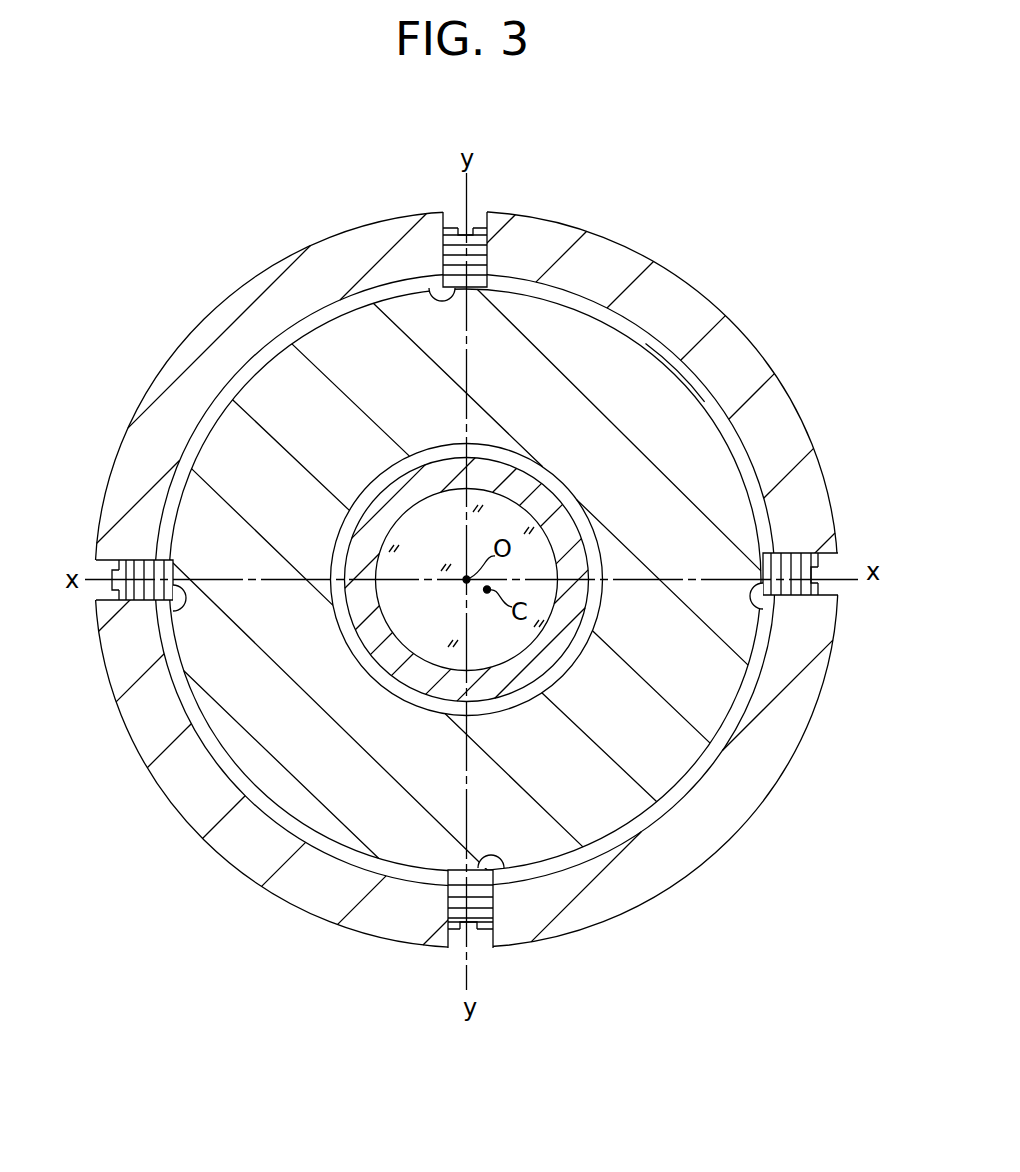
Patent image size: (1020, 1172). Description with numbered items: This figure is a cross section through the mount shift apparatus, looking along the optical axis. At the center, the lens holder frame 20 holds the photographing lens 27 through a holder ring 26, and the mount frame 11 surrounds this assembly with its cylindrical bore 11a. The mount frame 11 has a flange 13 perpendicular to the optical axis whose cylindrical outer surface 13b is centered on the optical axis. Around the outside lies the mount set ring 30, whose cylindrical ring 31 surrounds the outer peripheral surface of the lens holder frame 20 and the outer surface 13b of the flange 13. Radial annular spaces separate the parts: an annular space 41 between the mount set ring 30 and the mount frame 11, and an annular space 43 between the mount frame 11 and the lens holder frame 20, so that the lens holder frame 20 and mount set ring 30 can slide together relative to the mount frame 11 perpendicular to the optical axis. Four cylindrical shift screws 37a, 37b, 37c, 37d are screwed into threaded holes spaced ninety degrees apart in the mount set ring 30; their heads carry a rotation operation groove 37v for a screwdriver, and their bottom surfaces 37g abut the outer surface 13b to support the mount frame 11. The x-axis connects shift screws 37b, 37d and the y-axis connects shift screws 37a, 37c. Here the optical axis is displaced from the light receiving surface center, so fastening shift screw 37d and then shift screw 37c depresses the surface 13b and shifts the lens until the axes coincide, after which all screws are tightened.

The mount set ring 30 is at (477, 580).
The cylindrical ring 31 is at (768, 370).
The cylindrical outer surface 13b is at (607, 307).
The annular space 41 is at (645, 337).
The mount frame 11 is at (534, 579).
The flange 13 is at (715, 715).
The annular space 43 is at (723, 795).
The cylindrical bore 11a is at (552, 469).
The lens holder frame 20 is at (470, 614).
The holder ring 26 is at (513, 680).
The photographing lens 27 is at (437, 650).
The shift screw 37a is at (488, 235).
The shift screw 37b is at (122, 600).
The shift screw 37c is at (457, 908).
The shift screw 37d is at (810, 552).
The rotation operation groove 37v is at (467, 226).
The bottom surface 37g is at (430, 292).